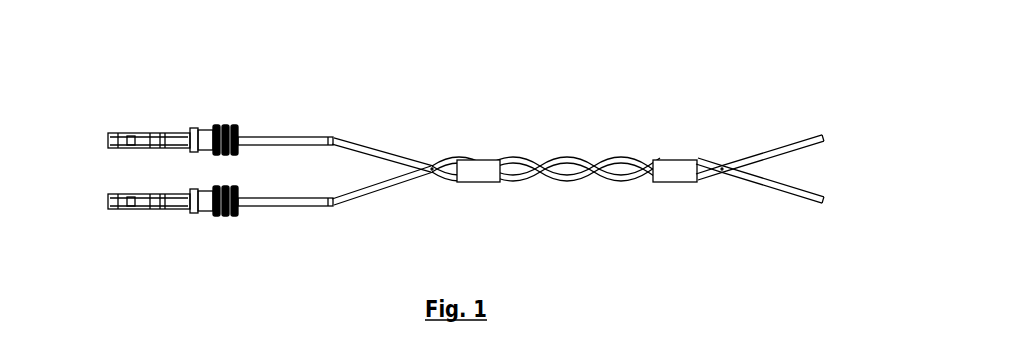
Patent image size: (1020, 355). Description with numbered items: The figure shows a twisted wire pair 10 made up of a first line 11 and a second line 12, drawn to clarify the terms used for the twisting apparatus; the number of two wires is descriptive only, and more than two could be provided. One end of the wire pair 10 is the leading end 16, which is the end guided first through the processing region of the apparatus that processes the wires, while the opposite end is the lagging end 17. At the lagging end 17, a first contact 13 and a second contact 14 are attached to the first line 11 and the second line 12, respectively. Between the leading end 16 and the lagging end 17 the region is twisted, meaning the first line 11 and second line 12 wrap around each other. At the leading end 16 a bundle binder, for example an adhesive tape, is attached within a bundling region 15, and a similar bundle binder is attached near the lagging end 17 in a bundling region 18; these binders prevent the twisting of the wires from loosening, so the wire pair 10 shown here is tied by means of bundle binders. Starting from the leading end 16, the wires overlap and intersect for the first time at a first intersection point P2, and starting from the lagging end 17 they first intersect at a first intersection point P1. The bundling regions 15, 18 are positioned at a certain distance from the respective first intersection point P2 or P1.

The twisted wire pair 10 is at (617, 107).
The first line 11 is at (307, 142).
The second line 12 is at (307, 206).
The first contact 13 is at (180, 142).
The second contact 14 is at (185, 206).
The bundling region 15 is at (665, 172).
The leading end 16 is at (818, 172).
The lagging end 17 is at (105, 166).
The bundling region 18 is at (480, 170).
The first intersection point P1 is at (431, 167).
The first intersection point P2 is at (720, 172).